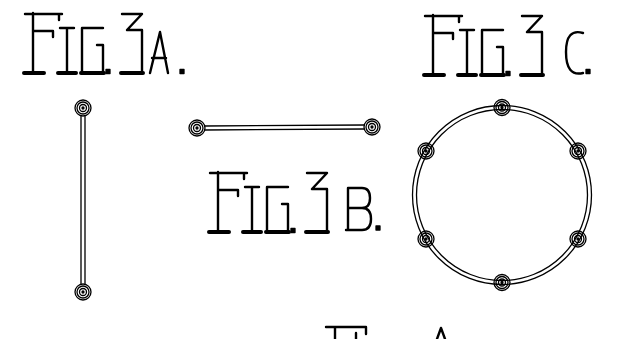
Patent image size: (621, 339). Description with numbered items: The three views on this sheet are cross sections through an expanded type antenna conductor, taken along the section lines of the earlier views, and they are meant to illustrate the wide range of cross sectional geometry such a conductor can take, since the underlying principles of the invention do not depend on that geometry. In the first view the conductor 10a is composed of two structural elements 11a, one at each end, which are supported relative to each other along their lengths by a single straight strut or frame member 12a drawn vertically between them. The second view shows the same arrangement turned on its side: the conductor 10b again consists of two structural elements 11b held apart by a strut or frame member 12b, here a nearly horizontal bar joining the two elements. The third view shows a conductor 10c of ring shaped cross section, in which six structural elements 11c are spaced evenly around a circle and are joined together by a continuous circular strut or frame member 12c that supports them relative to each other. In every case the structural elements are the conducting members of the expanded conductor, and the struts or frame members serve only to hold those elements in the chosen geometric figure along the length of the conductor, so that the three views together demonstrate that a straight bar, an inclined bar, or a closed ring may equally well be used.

In FIG. 3A, the conductor 10a is at (97, 204).
In FIG. 3A, the structural element 11a is at (91, 108).
In FIG. 3A, the strut or frame member 12a is at (86, 258).
In FIG. 3B, the conductor 10b is at (282, 118).
In FIG. 3B, the structural element 11b is at (198, 137).
In FIG. 3B, the strut or frame member 12b is at (296, 132).
In FIG. 3C, the conductor 10c is at (550, 113).
In FIG. 3C, the structural element 11c is at (434, 158).
In FIG. 3C, the strut or frame member 12c is at (443, 257).